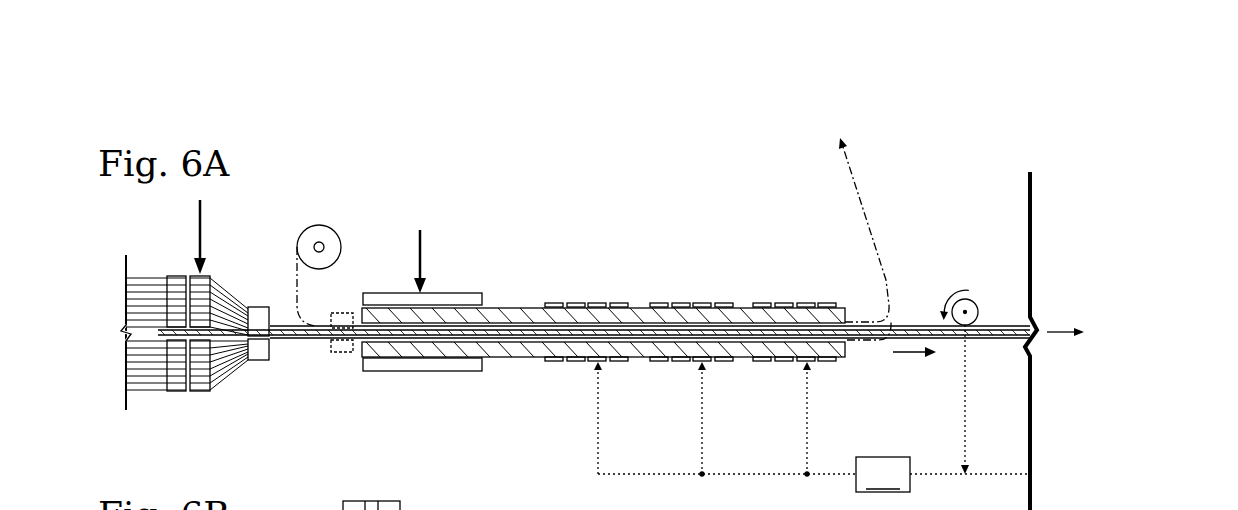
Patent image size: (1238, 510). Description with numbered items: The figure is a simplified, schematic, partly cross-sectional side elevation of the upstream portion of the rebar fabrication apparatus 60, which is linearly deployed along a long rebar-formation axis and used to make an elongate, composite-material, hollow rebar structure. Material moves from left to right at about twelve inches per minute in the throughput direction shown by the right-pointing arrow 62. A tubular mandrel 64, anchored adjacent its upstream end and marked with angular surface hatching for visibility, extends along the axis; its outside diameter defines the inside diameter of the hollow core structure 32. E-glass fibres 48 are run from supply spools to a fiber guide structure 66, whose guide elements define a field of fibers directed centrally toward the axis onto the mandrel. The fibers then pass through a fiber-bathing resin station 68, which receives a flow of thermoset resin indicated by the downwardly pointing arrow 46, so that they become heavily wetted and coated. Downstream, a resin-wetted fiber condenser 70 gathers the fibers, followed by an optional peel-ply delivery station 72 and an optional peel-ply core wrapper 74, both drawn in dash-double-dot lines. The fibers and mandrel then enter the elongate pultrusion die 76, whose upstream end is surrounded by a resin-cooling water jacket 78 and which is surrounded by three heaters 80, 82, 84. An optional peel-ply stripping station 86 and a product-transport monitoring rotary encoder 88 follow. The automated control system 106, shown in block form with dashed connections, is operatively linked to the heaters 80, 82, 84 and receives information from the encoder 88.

The core structure 32 is at (998, 341).
The downwardly pointing arrow 46 is at (203, 237).
The e-glass fibres 48 is at (114, 359).
The rebar fabrication apparatus 60 is at (609, 171).
The right-pointing arrow 62 is at (909, 355).
The tubular mandrel 64 is at (152, 330).
The fiber guide structure 66 is at (180, 392).
The fiber-bathing resin station 68 is at (200, 392).
The resin-wetted fiber condenser 70 is at (258, 361).
The peel-ply delivery station 72 is at (297, 249).
The peel-ply core wrapper 74 is at (346, 353).
The pultrusion die 76 is at (510, 300).
The resin-cooling water jacket 78 is at (440, 293).
The heater 80 is at (580, 296).
The heater 82 is at (683, 296).
The heater 84 is at (788, 296).
The peel-ply stripping station 86 is at (898, 303).
The rotary encoder 88 is at (942, 292).
The automated control system 106 is at (811, 427).